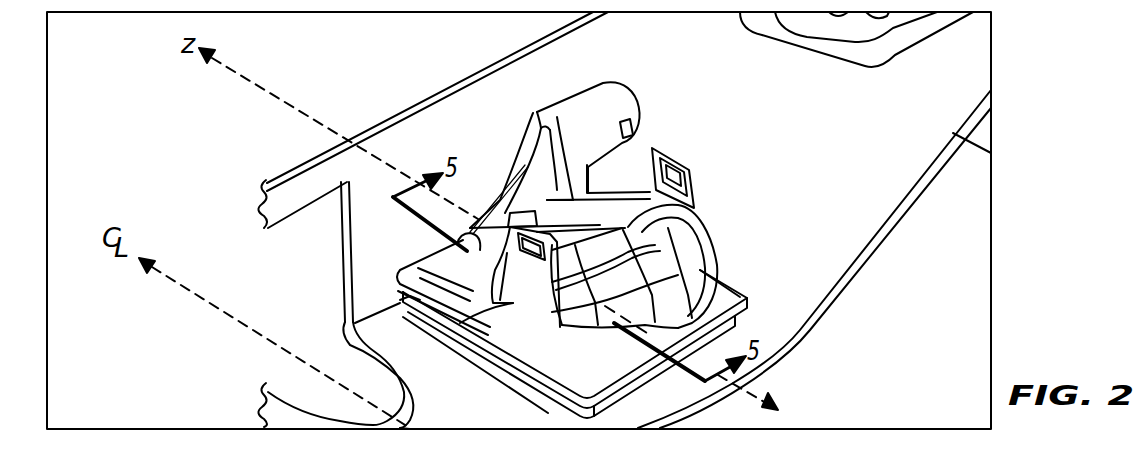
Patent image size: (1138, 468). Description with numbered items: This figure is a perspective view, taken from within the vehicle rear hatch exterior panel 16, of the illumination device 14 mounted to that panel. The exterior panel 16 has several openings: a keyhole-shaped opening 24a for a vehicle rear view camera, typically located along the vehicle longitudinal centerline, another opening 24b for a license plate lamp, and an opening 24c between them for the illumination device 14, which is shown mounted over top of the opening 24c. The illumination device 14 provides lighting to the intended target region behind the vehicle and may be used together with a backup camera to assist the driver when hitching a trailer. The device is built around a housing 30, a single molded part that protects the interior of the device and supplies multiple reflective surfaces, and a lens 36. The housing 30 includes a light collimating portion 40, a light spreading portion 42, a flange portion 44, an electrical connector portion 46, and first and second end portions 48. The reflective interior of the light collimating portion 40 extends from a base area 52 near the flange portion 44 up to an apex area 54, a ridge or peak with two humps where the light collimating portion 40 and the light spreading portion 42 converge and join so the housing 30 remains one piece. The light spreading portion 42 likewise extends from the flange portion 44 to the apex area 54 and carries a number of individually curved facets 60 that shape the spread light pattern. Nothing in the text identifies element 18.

The illumination device 14 is at (651, 133).
The vehicle rear hatch exterior panel 16 is at (452, 72).
The vehicle floor 18 is at (384, 372).
The keyhole-shaped opening 24a is at (350, 341).
The opening 24b is at (828, 12).
The opening 24c is at (490, 344).
The housing 30 is at (718, 212).
The lens 36 is at (576, 402).
The light collimating portion 40 is at (468, 251).
The light spreading portion 42 is at (700, 242).
The flange portion 44 is at (628, 370).
The electrical connector portion 46 is at (614, 80).
The first and second end portions 48 is at (407, 307).
The base area 52 is at (447, 263).
The apex area 54 is at (636, 216).
The individually curved facets 60 is at (568, 298).